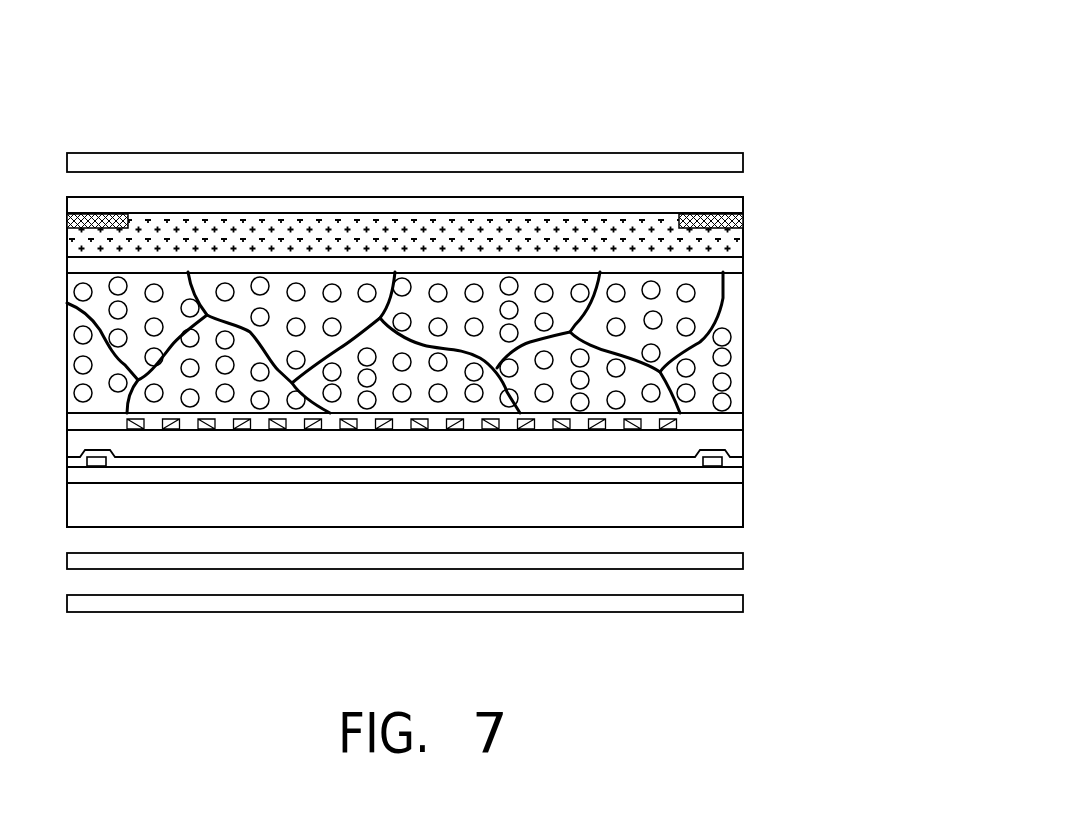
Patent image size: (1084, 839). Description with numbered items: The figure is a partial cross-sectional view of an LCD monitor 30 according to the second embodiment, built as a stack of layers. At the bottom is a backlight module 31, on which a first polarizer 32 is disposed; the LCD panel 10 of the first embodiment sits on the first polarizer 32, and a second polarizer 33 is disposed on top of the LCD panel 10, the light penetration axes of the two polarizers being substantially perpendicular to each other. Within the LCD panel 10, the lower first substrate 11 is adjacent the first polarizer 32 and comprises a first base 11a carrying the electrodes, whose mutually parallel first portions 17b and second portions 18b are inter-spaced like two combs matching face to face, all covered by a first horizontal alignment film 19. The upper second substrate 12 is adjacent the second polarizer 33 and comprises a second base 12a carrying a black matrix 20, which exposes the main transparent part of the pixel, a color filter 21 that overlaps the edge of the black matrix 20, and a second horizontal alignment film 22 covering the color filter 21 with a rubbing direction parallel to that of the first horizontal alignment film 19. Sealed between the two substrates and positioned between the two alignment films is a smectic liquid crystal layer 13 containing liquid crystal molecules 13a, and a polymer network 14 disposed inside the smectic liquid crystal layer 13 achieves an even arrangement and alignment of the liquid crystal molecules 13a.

The LCD monitor 30 is at (928, 47).
The second polarizer 33 is at (735, 163).
The LCD panel 10 is at (742, 193).
The second substrate 12 is at (497, 232).
The second base 12a is at (737, 207).
The black matrix 20 is at (737, 220).
The color filter 21 is at (737, 242).
The second horizontal alignment film 22 is at (462, 274).
The smectic liquid crystal layer 13 is at (472, 342).
The liquid crystal molecules 13a is at (653, 320).
The polymer network 14 is at (698, 350).
The first horizontal alignment film 19 is at (462, 439).
The second portions 18b is at (632, 425).
The first substrate 11 is at (500, 478).
The first portions 17b is at (732, 458).
The first base 11a is at (728, 505).
The first polarizer 32 is at (730, 562).
The backlight module 31 is at (730, 605).